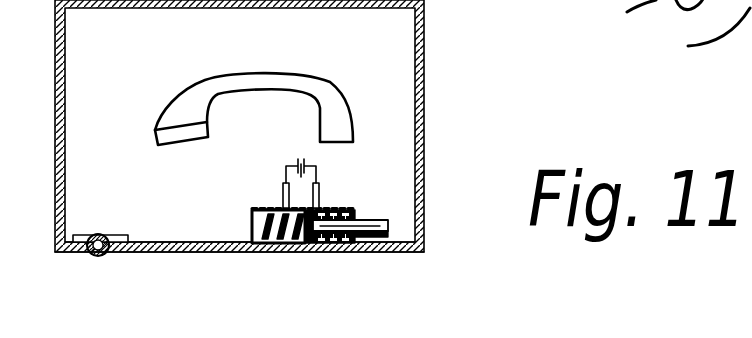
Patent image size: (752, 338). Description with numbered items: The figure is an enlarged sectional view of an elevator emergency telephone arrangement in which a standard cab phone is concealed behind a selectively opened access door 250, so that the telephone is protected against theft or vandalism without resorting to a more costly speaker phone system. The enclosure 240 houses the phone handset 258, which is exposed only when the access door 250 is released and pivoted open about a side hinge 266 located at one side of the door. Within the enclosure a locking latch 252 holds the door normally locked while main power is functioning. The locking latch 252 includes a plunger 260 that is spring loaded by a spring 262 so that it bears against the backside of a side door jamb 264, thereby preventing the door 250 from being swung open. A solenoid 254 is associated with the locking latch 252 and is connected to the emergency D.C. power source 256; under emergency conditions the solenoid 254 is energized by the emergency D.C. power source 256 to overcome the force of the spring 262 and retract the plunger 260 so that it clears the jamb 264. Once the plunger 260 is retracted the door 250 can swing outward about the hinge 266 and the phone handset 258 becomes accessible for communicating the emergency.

The housing 240 is at (428, 54).
The access door 250 is at (196, 252).
The locking latch 252 is at (366, 199).
The solenoid 254 is at (332, 208).
The emergency D.C. power source 256 is at (297, 160).
The phone handset 258 is at (255, 80).
The plunger 260 is at (385, 227).
The spring 262 is at (263, 205).
The side door jamb 264 is at (373, 252).
The side hinge 266 is at (98, 240).